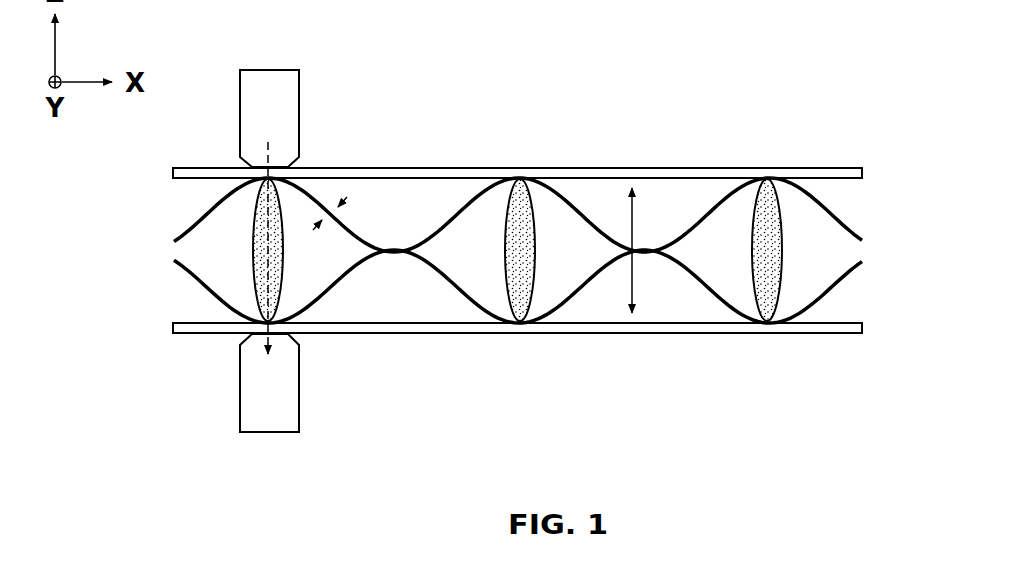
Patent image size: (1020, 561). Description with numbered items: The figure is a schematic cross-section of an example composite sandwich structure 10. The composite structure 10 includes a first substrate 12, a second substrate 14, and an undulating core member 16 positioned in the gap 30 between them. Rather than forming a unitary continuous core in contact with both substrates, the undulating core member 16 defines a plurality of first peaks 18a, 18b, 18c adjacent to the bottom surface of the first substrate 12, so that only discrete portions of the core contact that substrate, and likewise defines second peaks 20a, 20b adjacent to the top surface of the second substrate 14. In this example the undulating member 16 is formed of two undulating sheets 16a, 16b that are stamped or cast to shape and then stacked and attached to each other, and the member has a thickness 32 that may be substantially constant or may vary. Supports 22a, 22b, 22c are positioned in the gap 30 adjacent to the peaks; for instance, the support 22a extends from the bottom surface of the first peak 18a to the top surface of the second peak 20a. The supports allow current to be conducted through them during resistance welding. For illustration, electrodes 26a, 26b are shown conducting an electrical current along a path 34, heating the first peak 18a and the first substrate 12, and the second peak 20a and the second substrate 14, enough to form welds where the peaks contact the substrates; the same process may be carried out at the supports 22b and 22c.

The composite sandwich structure 10 is at (848, 72).
The first substrate 12 is at (643, 168).
The second substrate 14 is at (667, 333).
The undulating core member 16 is at (539, 252).
The undulating sheet 16a is at (470, 198).
The undulating sheet 16b is at (455, 290).
The first peak 18a is at (288, 180).
The first peak 18b is at (537, 178).
The first peak 18c is at (785, 178).
The second peak 20a is at (283, 330).
The second peak 20b is at (769, 333).
The support 22a is at (258, 240).
The support 22b is at (516, 205).
The support 22c is at (773, 222).
The electrode 26a is at (252, 71).
The electrode 26b is at (240, 415).
The gap 30 is at (636, 225).
The thickness 32 is at (348, 208).
The path 34 is at (269, 232).